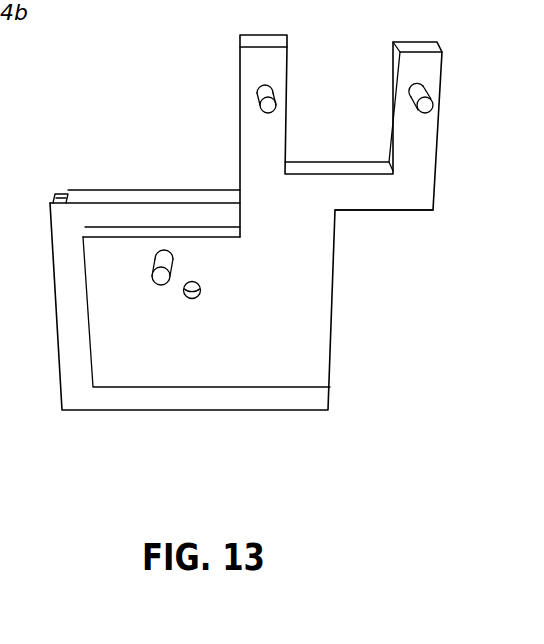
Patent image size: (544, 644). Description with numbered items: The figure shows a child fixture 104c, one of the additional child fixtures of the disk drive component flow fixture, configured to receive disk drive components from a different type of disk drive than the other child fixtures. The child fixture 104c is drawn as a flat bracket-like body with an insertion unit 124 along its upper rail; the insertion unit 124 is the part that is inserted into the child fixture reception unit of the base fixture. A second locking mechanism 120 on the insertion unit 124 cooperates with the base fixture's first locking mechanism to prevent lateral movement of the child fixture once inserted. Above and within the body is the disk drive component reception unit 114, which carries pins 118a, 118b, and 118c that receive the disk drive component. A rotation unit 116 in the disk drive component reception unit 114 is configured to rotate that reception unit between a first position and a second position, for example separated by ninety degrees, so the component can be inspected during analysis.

The child fixture 104c is at (436, 137).
The disk drive component reception unit 114 is at (387, 200).
The rotation unit 116 is at (200, 291).
The pin 118a is at (259, 104).
The pin 118b is at (415, 106).
The pin 118c is at (157, 252).
The second locking mechanism 120 is at (62, 195).
The insertion unit 124 is at (195, 194).